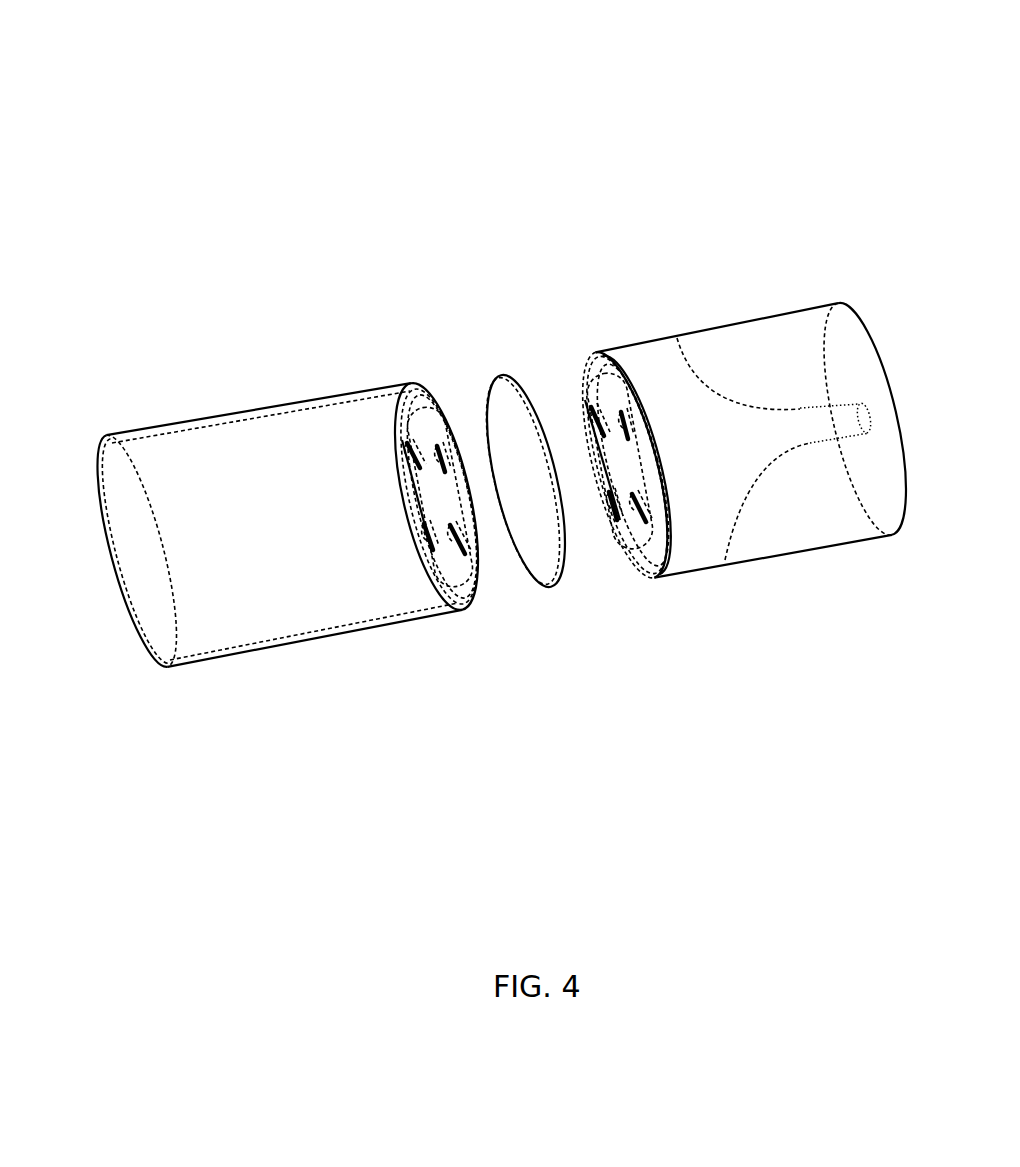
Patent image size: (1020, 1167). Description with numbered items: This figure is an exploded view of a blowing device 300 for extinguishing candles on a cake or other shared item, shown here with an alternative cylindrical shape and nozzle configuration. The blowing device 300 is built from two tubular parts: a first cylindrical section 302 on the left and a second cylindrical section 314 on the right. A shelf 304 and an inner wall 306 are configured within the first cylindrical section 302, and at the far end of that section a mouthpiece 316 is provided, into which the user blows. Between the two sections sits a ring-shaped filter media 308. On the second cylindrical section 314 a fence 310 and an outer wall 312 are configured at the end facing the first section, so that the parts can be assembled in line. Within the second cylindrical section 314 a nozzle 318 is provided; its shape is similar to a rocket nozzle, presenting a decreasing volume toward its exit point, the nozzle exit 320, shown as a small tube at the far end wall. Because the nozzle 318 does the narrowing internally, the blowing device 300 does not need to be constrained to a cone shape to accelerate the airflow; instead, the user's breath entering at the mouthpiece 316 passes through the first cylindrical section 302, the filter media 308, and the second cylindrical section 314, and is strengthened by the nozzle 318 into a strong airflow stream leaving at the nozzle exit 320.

The blowing device 300 is at (858, 80).
The first cylindrical section 302 is at (203, 460).
The shelf 304 is at (424, 385).
The inner wall 306 is at (471, 608).
The filter media 308 is at (515, 376).
The fence 310 is at (597, 350).
The outer wall 312 is at (659, 579).
The second cylindrical section 314 is at (823, 549).
The mouthpiece 316 is at (145, 630).
The nozzle 318 is at (858, 522).
The nozzle exit 320 is at (872, 407).